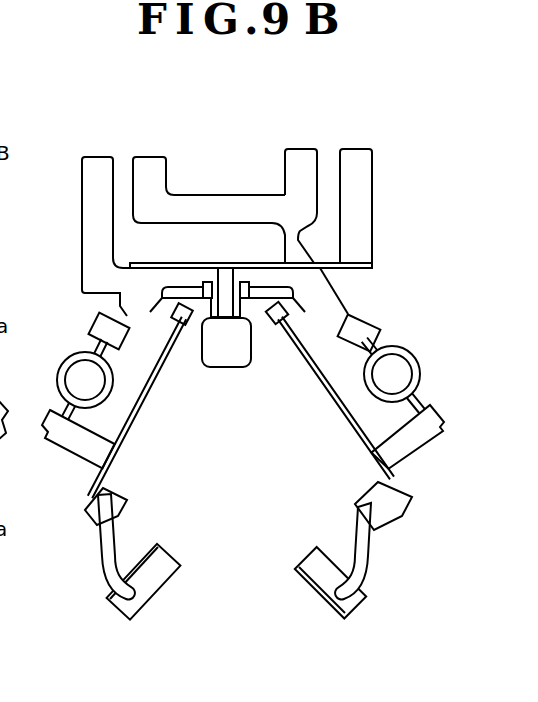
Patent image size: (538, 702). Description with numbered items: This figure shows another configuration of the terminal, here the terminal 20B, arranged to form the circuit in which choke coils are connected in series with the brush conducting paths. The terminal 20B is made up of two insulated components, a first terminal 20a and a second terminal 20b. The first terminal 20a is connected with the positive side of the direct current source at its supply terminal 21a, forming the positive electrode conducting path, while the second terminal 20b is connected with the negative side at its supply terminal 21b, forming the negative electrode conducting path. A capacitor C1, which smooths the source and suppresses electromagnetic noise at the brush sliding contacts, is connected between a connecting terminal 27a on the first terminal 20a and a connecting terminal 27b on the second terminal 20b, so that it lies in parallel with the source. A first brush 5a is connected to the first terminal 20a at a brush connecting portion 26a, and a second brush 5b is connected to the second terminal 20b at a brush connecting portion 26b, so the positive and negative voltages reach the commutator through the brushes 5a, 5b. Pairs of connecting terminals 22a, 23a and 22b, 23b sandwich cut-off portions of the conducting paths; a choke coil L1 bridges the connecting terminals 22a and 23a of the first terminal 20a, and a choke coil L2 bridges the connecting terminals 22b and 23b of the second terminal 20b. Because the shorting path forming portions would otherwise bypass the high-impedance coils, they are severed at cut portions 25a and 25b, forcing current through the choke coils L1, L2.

The holder unit 20B is at (385, 234).
The first terminal 20a is at (213, 205).
The second terminal 20b is at (88, 170).
The supply terminal 21a is at (148, 165).
The supply terminal 21b is at (355, 162).
The connecting terminal 22a is at (372, 318).
The connecting terminal 22b is at (94, 323).
The connecting terminal 23a is at (421, 440).
The connecting terminal 23b is at (57, 450).
The cut portion 25a is at (298, 325).
The cut portion 25b is at (163, 322).
The brush connecting portion 26a is at (356, 508).
The brush connecting portion 26b is at (125, 503).
The connecting terminal 27a is at (250, 296).
The connecting terminal 27b is at (200, 296).
The capacitor C1 is at (227, 365).
The choke coil L1 is at (424, 370).
The choke coil L2 is at (64, 378).
The first brush 5a is at (320, 582).
The second brush 5b is at (153, 580).